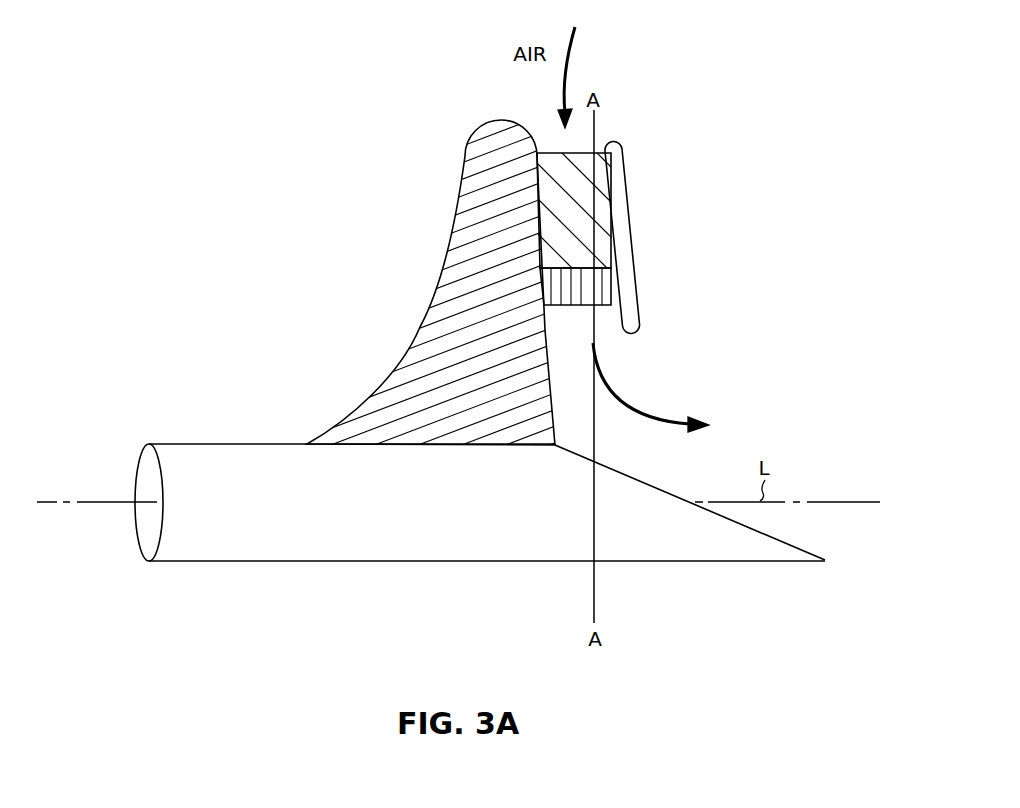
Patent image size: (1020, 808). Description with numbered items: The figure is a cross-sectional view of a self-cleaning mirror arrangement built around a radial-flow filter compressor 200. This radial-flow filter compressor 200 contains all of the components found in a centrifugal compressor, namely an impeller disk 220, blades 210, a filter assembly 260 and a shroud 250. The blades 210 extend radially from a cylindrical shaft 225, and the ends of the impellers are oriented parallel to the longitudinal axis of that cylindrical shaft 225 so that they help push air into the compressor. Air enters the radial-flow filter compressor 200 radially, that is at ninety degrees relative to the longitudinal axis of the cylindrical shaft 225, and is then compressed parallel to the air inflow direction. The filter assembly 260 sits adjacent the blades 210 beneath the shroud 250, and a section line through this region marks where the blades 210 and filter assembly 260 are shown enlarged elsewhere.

The radial-flow filter compressor 200 is at (451, 119).
The blades 210 is at (584, 187).
The impeller disk 220 is at (433, 301).
The cylindrical shaft 225 is at (698, 549).
The shroud 250 is at (629, 228).
The filter assembly 260 is at (605, 286).